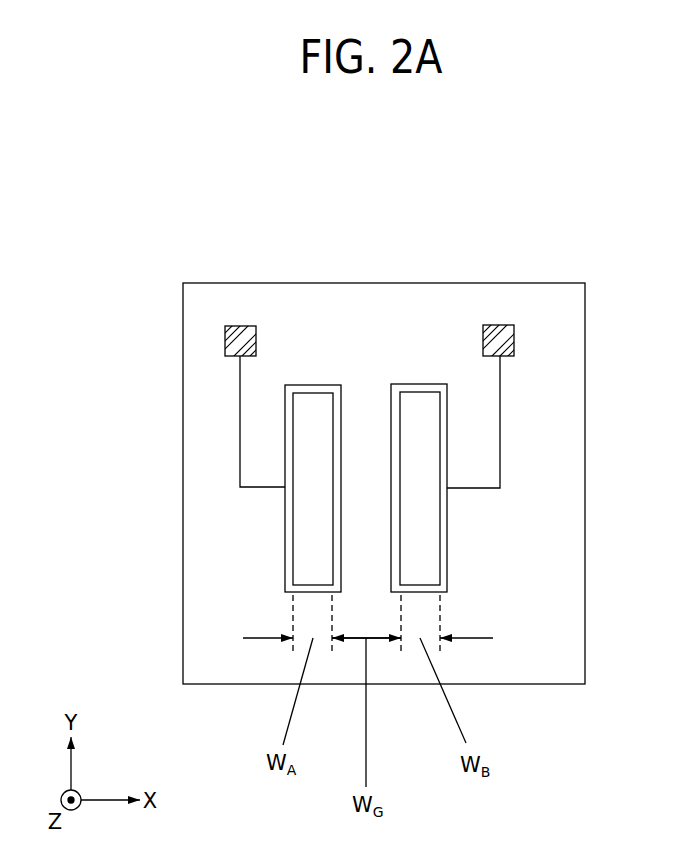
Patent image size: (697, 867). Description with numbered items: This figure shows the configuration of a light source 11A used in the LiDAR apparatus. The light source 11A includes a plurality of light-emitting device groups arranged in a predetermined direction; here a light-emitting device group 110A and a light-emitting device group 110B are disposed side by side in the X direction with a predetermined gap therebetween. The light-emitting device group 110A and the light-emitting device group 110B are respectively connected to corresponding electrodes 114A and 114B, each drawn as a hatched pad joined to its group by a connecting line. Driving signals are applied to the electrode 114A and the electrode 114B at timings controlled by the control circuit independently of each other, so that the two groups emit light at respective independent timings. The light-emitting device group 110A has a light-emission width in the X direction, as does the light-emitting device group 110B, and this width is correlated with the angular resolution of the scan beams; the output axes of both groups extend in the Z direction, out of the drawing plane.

The light source 11A is at (591, 143).
The light-emitting device group 110A is at (313, 397).
The light-emitting device group 110B is at (417, 397).
The electrode 114A is at (225, 341).
The electrode 114B is at (514, 341).